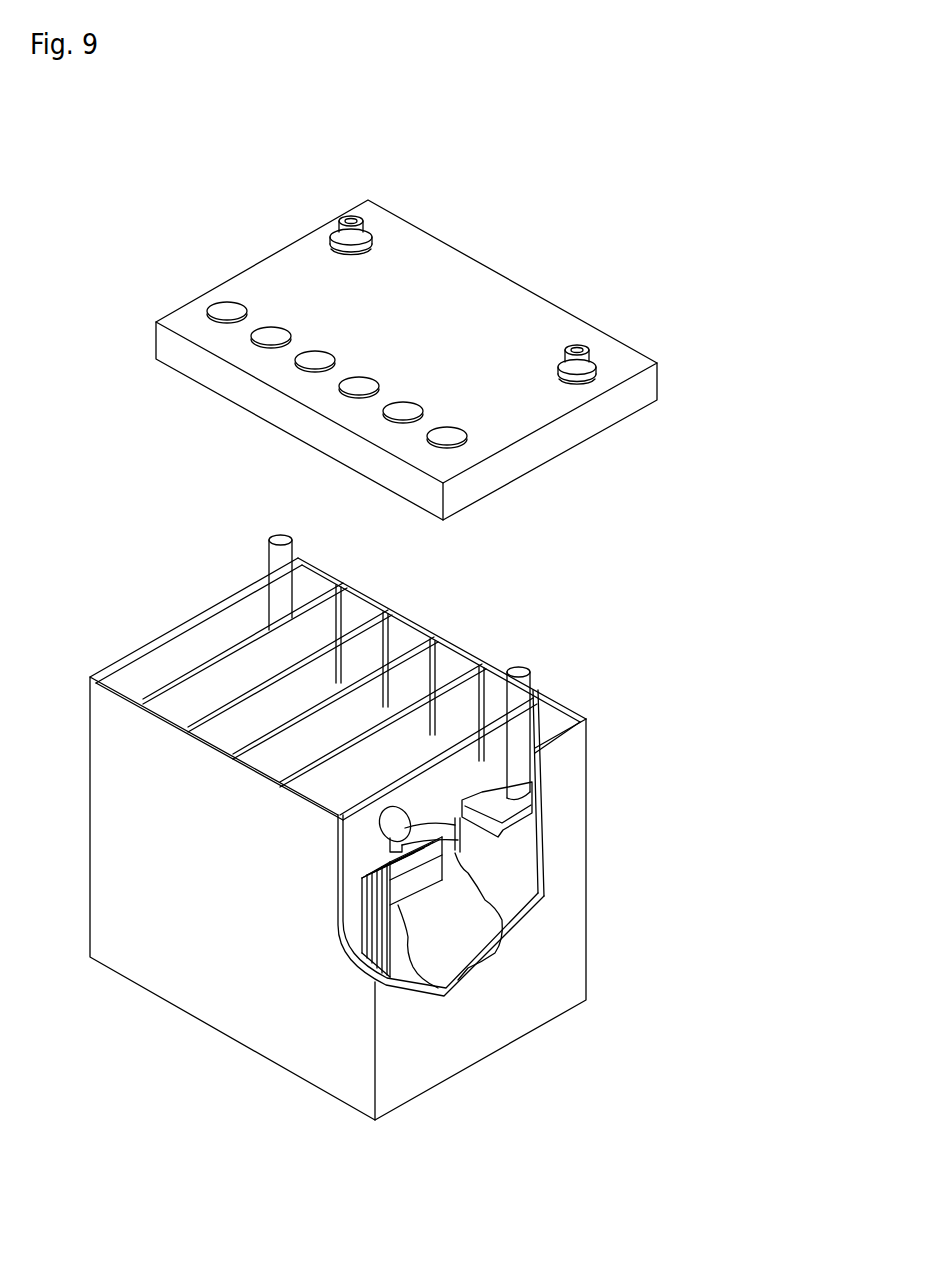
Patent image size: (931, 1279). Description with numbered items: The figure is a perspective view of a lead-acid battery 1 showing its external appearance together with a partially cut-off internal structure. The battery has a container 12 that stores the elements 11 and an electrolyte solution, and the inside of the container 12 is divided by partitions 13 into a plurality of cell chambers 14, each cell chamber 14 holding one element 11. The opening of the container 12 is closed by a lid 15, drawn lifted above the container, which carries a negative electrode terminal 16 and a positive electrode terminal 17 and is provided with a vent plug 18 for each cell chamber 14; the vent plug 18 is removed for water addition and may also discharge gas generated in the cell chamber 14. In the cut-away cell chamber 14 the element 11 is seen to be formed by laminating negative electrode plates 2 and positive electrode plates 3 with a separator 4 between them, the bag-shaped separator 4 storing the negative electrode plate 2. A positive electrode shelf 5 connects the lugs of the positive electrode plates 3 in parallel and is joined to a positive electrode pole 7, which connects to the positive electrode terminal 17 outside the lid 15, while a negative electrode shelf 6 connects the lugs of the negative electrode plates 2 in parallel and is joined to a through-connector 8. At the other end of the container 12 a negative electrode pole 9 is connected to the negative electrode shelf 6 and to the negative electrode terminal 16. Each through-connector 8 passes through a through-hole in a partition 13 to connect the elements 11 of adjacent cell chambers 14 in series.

The lead-acid battery 1 is at (486, 157).
The negative electrode plate 2 is at (463, 923).
The positive electrode plate 3 is at (508, 880).
The separator 4 is at (412, 970).
The positive electrode shelf 5 is at (540, 823).
The negative electrode shelf 6 is at (433, 822).
The positive electrode pole 7 is at (522, 668).
The through-connector 8 is at (340, 862).
The negative electrode pole 9 is at (280, 535).
The element 11 is at (487, 969).
The container 12 is at (570, 855).
The partition 13 is at (243, 695).
The cell chamber 14 is at (185, 697).
The lid 15 is at (465, 290).
The negative electrode terminal 16 is at (350, 215).
The positive electrode terminal 17 is at (577, 344).
The vent plug 18 is at (221, 305).